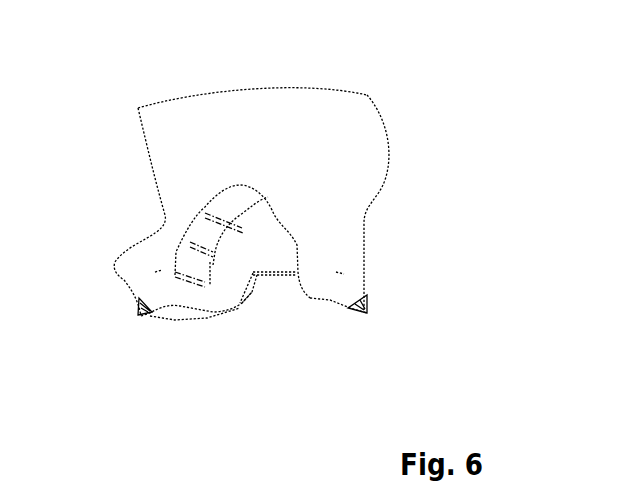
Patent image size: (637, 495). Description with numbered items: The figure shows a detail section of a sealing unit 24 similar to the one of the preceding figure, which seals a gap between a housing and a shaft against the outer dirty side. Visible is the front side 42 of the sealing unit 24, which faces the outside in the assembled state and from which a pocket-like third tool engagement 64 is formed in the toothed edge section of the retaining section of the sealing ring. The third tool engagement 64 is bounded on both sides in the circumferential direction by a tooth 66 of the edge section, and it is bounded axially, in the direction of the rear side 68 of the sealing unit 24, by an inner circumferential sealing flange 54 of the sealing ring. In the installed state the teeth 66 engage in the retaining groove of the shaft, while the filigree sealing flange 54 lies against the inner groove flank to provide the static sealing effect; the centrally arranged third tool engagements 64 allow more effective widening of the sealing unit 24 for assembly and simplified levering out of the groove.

The sealing unit 24 is at (445, 112).
The front side 42 is at (306, 165).
The sealing flange 54 is at (268, 260).
The third tool engagement 64 is at (219, 244).
The tooth 66 is at (155, 272).
The rear side 68 is at (258, 295).